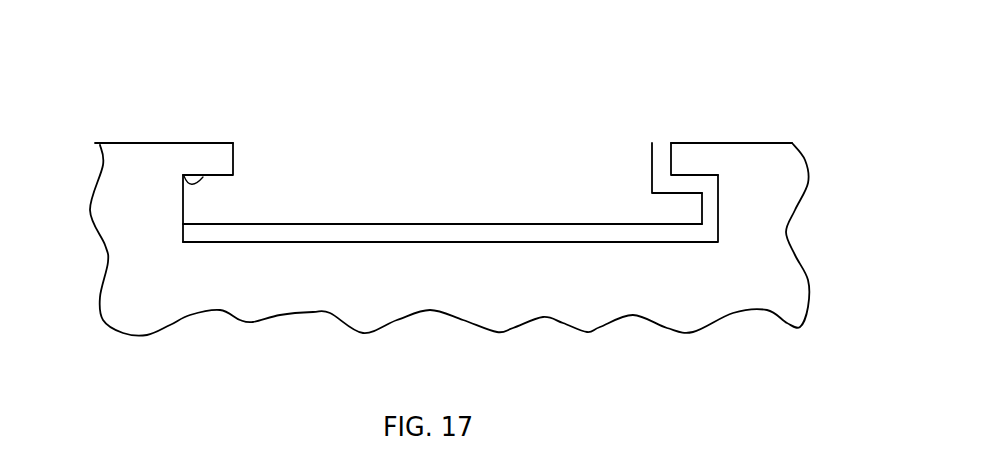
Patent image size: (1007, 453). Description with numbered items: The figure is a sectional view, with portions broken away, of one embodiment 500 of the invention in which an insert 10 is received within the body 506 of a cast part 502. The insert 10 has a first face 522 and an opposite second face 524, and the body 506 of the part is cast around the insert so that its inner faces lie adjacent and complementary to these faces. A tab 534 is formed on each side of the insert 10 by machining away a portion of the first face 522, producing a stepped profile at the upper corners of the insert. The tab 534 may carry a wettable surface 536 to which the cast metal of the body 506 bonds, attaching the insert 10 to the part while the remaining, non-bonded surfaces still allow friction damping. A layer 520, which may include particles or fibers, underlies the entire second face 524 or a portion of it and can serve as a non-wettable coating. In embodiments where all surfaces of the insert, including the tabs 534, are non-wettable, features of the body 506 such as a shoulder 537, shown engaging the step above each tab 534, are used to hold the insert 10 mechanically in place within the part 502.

The assembly 500 is at (173, 48).
The insert 10 is at (388, 172).
The base member 502 is at (638, 243).
The body 506 is at (197, 285).
The layer 520 is at (475, 233).
The first face 522 is at (310, 143).
The second face 524 is at (370, 224).
The tab 534 is at (183, 192).
The wettable surface 536 is at (183, 175).
The shoulder 537 is at (217, 175).